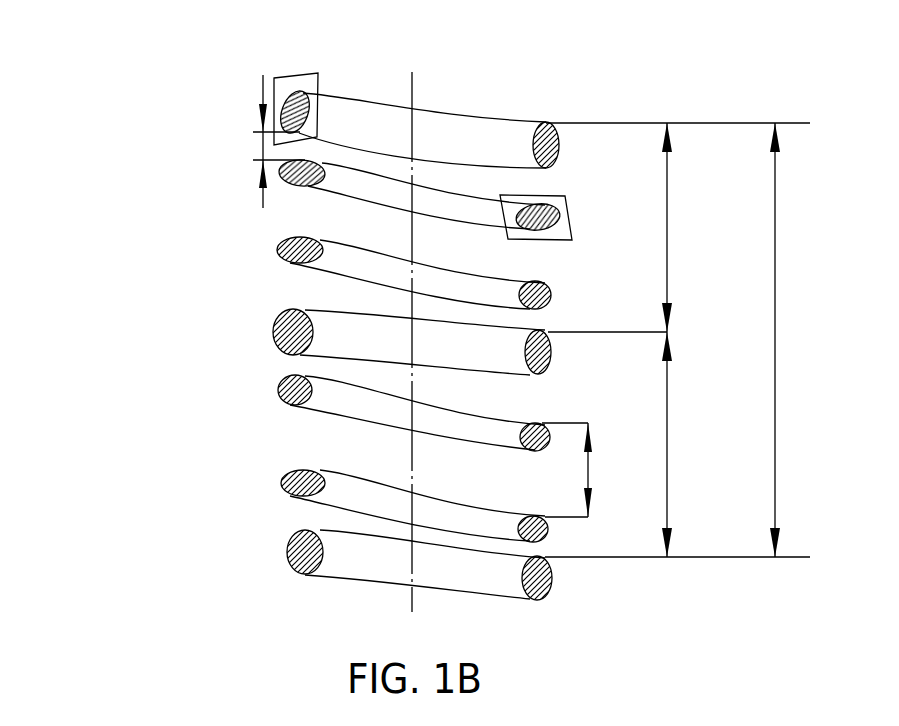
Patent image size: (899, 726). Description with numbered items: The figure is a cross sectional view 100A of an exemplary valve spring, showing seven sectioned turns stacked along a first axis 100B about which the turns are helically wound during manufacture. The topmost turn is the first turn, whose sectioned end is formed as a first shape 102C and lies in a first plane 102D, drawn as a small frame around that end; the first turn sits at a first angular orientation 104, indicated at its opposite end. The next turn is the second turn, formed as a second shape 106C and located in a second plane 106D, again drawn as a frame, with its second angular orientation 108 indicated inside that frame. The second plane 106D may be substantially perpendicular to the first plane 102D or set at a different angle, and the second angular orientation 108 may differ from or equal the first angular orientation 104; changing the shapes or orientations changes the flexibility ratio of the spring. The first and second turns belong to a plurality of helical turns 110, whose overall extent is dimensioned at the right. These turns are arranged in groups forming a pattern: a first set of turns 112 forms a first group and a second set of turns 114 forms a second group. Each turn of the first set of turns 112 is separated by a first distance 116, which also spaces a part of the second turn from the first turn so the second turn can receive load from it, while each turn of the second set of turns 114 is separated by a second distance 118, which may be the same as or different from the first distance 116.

The cross sectional view 100A is at (335, 306).
The first axis 100B is at (413, 467).
The first shape 102C is at (291, 90).
The first plane 102D is at (282, 88).
The first angular orientation 104 is at (573, 167).
The second shape 106C is at (299, 181).
The second plane 106D is at (550, 197).
The second angular orientation 108 is at (558, 214).
The plurality of helical turns 110 is at (775, 312).
The first set of turns 112 is at (668, 220).
The second set of turns 114 is at (667, 435).
The first distance 116 is at (259, 145).
The second distance 118 is at (588, 470).